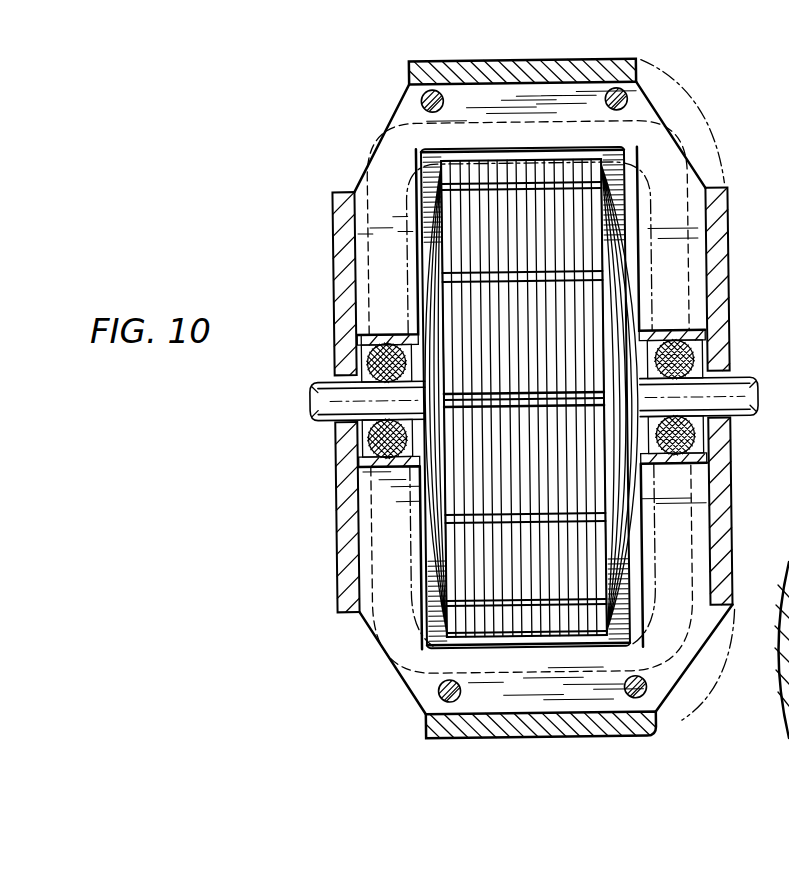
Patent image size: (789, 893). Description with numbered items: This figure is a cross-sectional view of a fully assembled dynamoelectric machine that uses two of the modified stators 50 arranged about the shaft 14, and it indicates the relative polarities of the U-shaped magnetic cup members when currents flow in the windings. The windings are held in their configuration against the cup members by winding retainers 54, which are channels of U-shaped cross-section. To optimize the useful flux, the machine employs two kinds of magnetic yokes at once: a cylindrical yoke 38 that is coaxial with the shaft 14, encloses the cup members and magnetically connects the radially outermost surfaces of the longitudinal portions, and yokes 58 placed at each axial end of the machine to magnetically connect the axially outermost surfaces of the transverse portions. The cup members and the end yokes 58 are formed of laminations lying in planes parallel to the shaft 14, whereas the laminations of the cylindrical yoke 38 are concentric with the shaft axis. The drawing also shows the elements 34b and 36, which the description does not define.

The shaft 14 is at (735, 390).
The bearing 34b is at (365, 444).
The bolt hole 36 is at (662, 752).
The cylindrical yoke 38 is at (546, 61).
The stator 50 is at (352, 148).
The winding retainer 54 is at (742, 440).
The yoke 58 is at (736, 566).